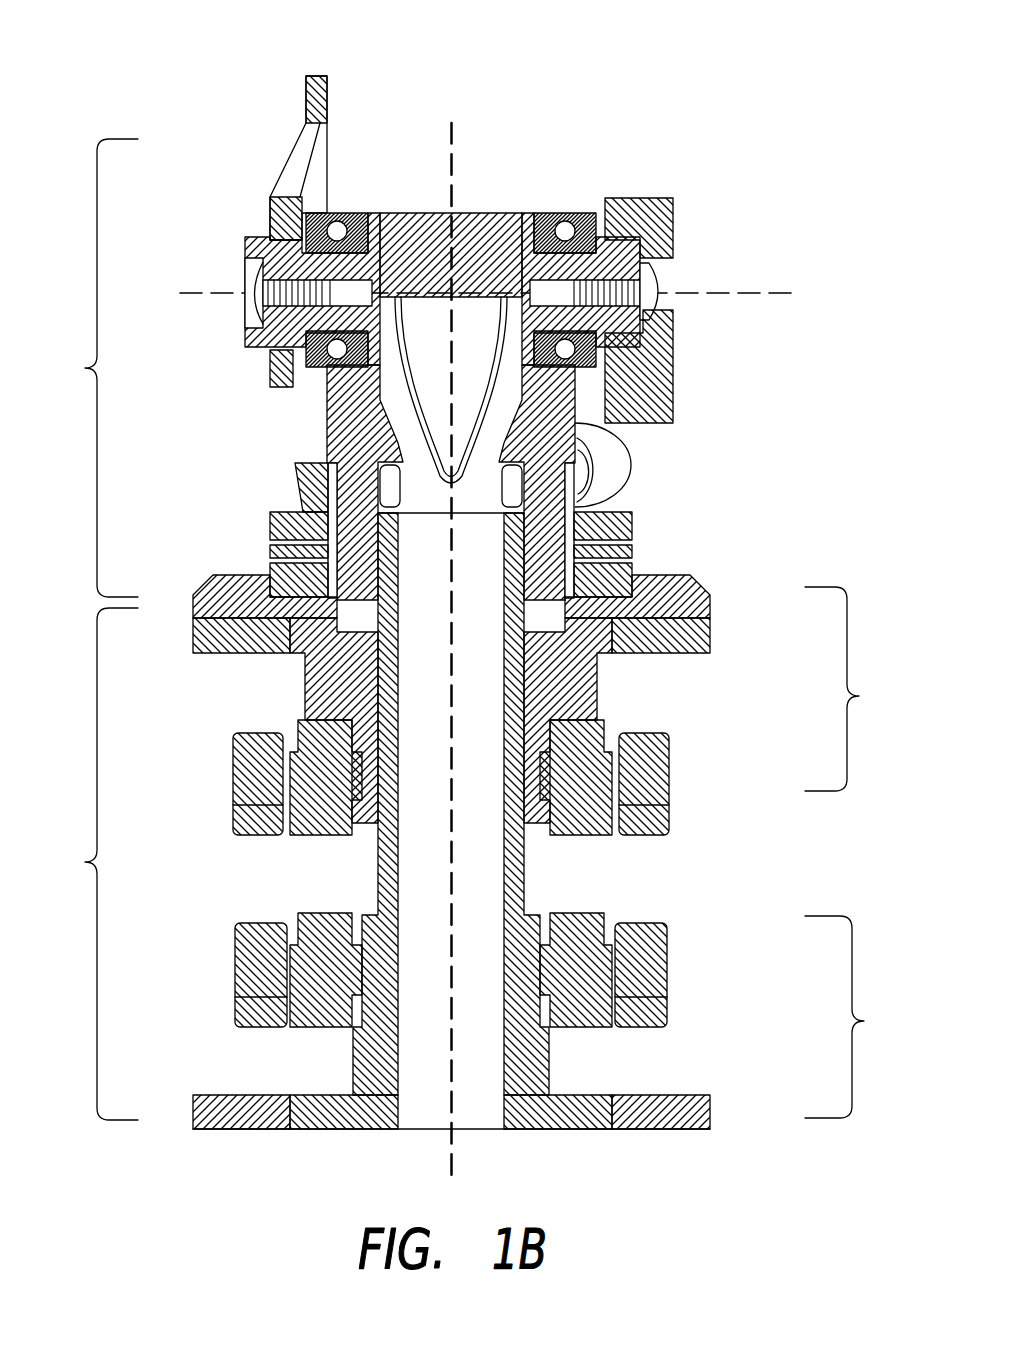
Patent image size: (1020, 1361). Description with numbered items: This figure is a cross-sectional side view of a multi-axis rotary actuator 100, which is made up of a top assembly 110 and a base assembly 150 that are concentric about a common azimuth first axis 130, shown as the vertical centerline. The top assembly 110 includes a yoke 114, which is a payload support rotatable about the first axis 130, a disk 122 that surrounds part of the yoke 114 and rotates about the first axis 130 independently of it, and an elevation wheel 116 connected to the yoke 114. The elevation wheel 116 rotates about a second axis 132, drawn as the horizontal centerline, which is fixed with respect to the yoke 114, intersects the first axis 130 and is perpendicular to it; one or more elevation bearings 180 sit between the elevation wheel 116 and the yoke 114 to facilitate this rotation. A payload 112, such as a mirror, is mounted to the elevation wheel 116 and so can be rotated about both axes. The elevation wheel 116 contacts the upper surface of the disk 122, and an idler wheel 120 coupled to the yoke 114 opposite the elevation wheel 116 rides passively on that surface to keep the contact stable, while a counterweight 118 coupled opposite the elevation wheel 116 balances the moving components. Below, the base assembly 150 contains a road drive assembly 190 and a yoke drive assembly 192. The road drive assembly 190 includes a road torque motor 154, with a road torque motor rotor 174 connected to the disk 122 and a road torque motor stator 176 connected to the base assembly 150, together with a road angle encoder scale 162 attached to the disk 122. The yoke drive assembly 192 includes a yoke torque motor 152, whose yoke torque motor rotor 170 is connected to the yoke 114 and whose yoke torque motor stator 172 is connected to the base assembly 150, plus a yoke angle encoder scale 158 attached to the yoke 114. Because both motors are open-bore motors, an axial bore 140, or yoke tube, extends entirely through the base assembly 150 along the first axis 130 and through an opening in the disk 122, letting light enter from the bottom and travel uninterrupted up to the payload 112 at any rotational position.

The multi-axis rotary actuator 100 is at (722, 137).
The top assembly 110 is at (85, 368).
The payload 112 is at (470, 300).
The yoke 114 is at (565, 212).
The elevation wheel 116 is at (306, 88).
The counterweight 118 is at (676, 224).
The idler wheel 120 is at (632, 462).
The disk 122 is at (633, 522).
The first axis 130 is at (453, 125).
The second axis 132 is at (760, 293).
The axial bore 140 is at (478, 1090).
The base assembly 150 is at (85, 862).
The yoke torque motor 152 is at (670, 968).
The road torque motor 154 is at (670, 774).
The yoke angle encoder scale 158 is at (712, 1116).
The road angle encoder scale 162 is at (712, 636).
The yoke torque motor rotor 170 is at (320, 1028).
The yoke torque motor stator 172 is at (235, 952).
The road torque motor rotor 174 is at (320, 836).
The road torque motor stator 176 is at (233, 760).
The elevation bearing 180 is at (335, 213).
The road drive assembly 190 is at (859, 696).
The yoke drive assembly 192 is at (864, 1021).